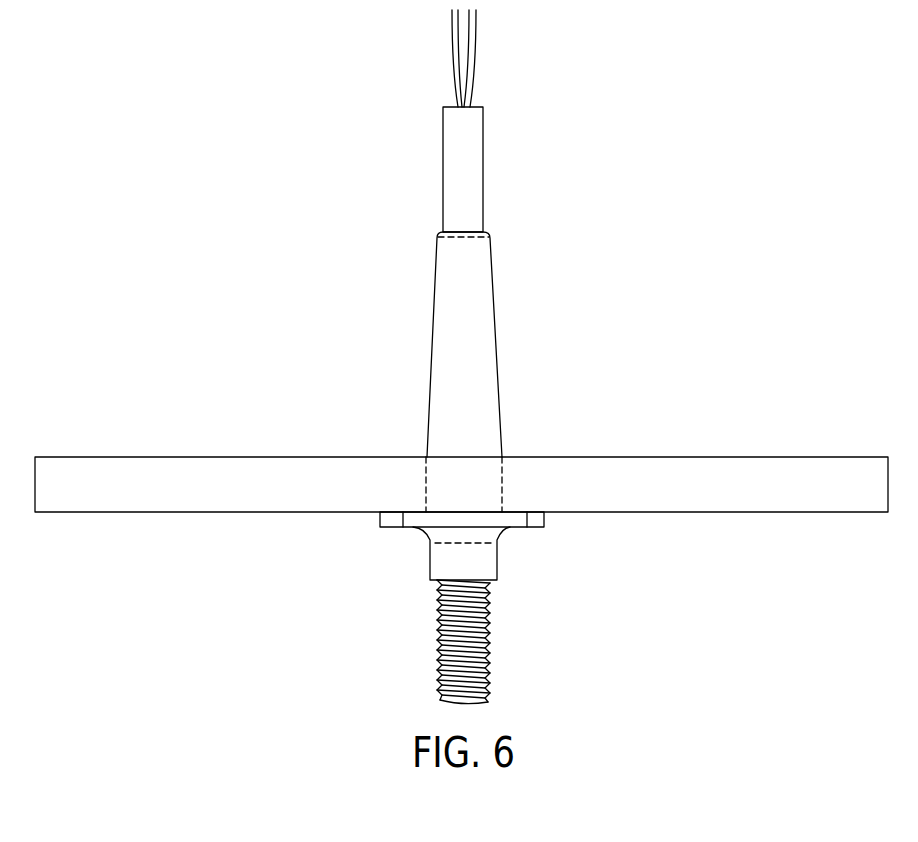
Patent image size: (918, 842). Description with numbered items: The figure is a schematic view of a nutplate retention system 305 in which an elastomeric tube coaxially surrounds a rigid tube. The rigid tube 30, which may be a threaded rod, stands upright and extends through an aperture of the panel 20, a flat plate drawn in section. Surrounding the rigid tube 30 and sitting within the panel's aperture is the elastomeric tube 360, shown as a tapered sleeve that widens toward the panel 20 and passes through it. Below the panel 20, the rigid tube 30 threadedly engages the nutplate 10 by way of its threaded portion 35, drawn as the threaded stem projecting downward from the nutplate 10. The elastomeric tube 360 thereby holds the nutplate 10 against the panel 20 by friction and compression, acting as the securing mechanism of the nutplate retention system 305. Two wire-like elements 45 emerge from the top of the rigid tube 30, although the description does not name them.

The nutplate retention system 305 is at (715, 80).
The panel 20 is at (255, 455).
The electrical wires 45 is at (473, 33).
The rigid tube 30 is at (467, 170).
The elastomeric tube 360 is at (480, 367).
The nutplate 10 is at (498, 558).
The threaded portion 35 is at (487, 642).